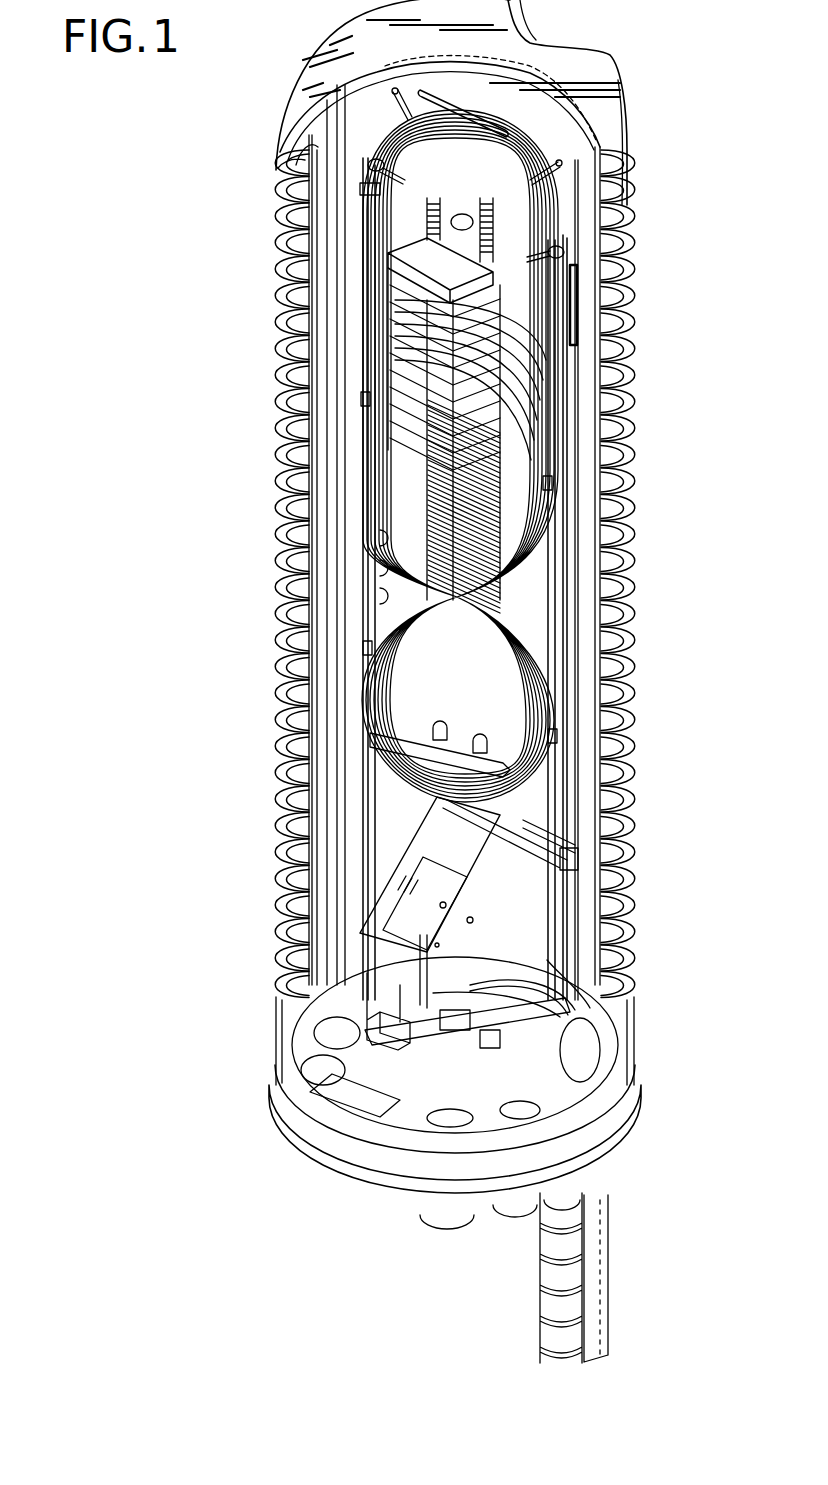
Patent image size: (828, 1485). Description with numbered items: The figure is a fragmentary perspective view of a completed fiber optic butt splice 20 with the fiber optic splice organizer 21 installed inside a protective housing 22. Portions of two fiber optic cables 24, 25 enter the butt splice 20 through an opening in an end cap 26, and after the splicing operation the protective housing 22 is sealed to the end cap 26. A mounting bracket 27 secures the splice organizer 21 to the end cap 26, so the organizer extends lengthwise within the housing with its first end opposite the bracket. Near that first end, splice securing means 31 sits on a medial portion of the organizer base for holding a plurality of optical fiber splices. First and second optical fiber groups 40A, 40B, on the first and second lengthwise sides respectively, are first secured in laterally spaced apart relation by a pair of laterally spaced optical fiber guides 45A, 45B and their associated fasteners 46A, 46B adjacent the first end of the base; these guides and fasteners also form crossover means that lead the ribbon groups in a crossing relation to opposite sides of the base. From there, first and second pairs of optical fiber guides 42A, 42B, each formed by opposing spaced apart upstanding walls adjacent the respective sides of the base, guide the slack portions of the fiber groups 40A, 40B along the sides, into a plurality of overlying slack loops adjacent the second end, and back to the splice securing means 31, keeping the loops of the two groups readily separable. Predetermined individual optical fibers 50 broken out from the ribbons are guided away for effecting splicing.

The fiber optic butt splice 20 is at (262, 139).
The fiber optic splice organizer 21 is at (568, 500).
The protective housing 22 is at (622, 74).
The fiber optic cable 24 is at (590, 1053).
The fiber optic cable 25 is at (556, 1023).
The end cap 26 is at (627, 1112).
The mounting bracket 27 is at (515, 869).
The splice securing means 31 is at (420, 494).
The first optical fiber group 40A is at (368, 246).
The second optical fiber group 40B is at (566, 282).
The first pair of optical fiber guides 42A is at (362, 400).
The second pair of optical fiber guides 42B is at (549, 482).
The optical fiber guide 45A is at (370, 166).
The optical fiber guide 45B is at (567, 236).
The fastener 46A is at (363, 190).
The fastener 46B is at (561, 266).
The individual optical fibers 50 is at (505, 706).